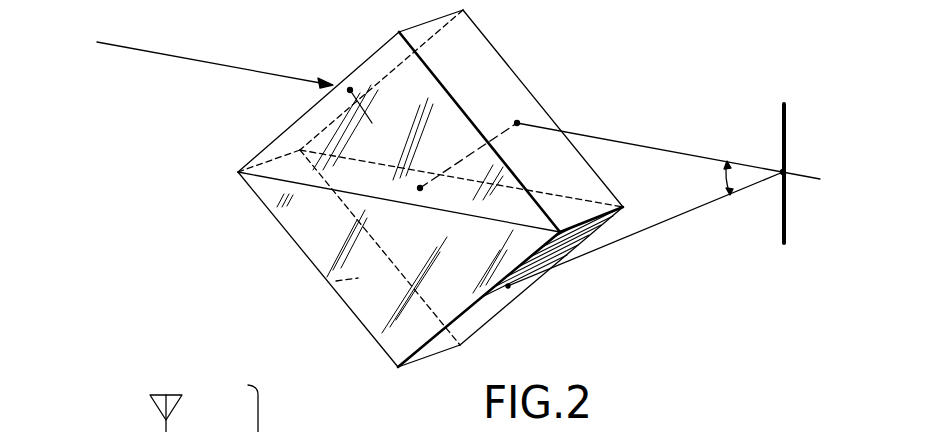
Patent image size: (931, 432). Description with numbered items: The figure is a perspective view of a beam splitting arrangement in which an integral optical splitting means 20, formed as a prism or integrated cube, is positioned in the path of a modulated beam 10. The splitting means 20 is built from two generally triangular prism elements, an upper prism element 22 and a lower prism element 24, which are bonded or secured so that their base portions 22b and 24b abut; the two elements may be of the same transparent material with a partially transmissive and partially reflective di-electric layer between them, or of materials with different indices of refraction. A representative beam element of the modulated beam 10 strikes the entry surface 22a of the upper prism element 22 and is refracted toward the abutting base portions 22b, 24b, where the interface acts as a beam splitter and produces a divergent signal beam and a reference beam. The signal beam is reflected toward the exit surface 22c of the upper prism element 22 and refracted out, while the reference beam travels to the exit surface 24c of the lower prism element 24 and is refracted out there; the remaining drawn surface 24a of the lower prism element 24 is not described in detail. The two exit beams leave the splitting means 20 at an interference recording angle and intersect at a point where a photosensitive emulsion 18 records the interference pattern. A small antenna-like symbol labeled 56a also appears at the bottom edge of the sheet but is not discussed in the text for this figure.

The modulated beam 10 is at (203, 59).
The photosensitive emulsion 18 is at (790, 128).
The integral optical splitting means 20 is at (205, 132).
The upper prism element 22 is at (300, 118).
The entry surface 22a is at (388, 50).
The base portion 22b is at (398, 163).
The exit surface 22c is at (507, 73).
The lower prism element 24 is at (292, 238).
The surface of second prism element 24a is at (326, 282).
The base portion 24b is at (393, 208).
The exit surface 24c is at (487, 312).
The antenna symbol 56a is at (149, 402).